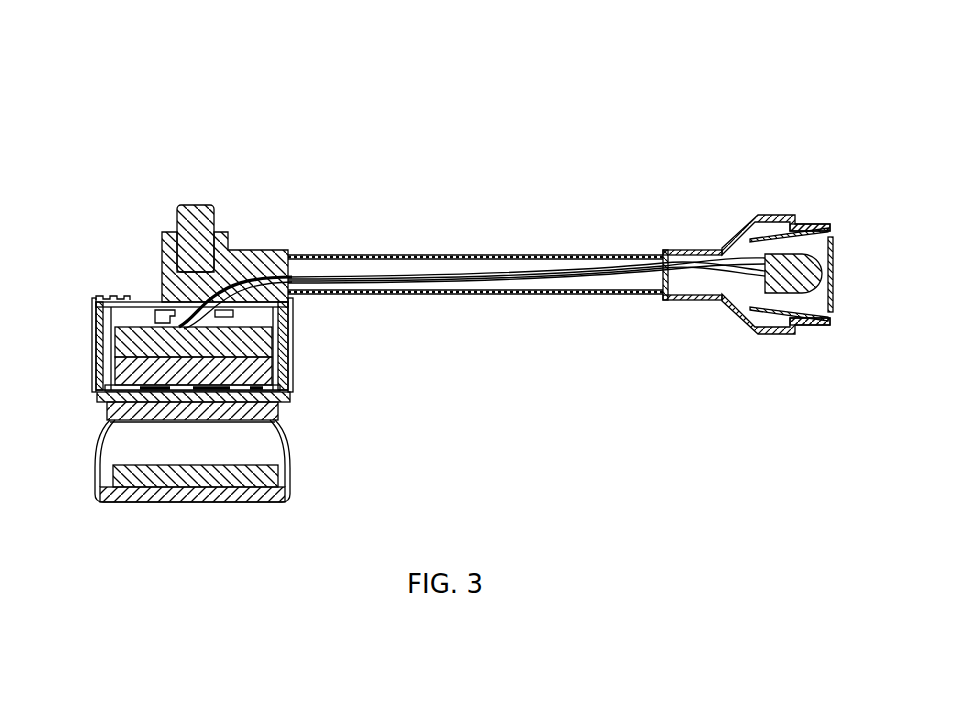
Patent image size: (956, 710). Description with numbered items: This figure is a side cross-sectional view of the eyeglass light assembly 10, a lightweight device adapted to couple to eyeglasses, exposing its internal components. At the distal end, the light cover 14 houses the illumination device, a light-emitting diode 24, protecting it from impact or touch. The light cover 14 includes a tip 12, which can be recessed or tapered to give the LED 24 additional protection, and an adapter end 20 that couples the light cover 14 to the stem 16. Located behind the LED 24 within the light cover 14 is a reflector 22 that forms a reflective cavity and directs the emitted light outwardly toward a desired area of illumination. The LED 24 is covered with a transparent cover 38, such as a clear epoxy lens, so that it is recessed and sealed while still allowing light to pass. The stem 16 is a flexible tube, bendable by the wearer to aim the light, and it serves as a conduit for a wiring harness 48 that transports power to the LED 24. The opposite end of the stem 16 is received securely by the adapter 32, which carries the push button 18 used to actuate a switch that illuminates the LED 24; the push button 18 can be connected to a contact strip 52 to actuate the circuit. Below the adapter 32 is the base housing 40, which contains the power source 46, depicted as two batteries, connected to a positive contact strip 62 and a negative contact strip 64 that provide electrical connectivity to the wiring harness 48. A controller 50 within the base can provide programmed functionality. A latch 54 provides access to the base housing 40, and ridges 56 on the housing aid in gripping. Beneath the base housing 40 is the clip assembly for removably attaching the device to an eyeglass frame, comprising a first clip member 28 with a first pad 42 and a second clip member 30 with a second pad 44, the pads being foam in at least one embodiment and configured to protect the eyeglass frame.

The eyeglass light assembly 10 is at (319, 83).
The tip 12 is at (820, 224).
The light cover 14 is at (781, 215).
The stem 16 is at (404, 255).
The push button 18 is at (196, 205).
The adapter end 20 is at (694, 250).
The reflector 22 is at (762, 239).
The light-emitting diode (LED) 24 is at (777, 283).
The first clip member 28 is at (288, 400).
The second clip member 30 is at (275, 496).
The adapter 32 is at (272, 250).
The transparent cover 38 is at (834, 240).
The base housing 40 is at (291, 362).
The first pad 42 is at (107, 411).
The second pad 44 is at (123, 453).
The power source 46 is at (116, 347).
The wiring harness 48 is at (540, 278).
The controller 50 is at (222, 313).
The contact strip 52 is at (176, 298).
The latch 54 is at (107, 298).
The ridges 56 is at (93, 312).
The positive contact strip 62 is at (291, 385).
The negative contact strip 64 is at (156, 318).